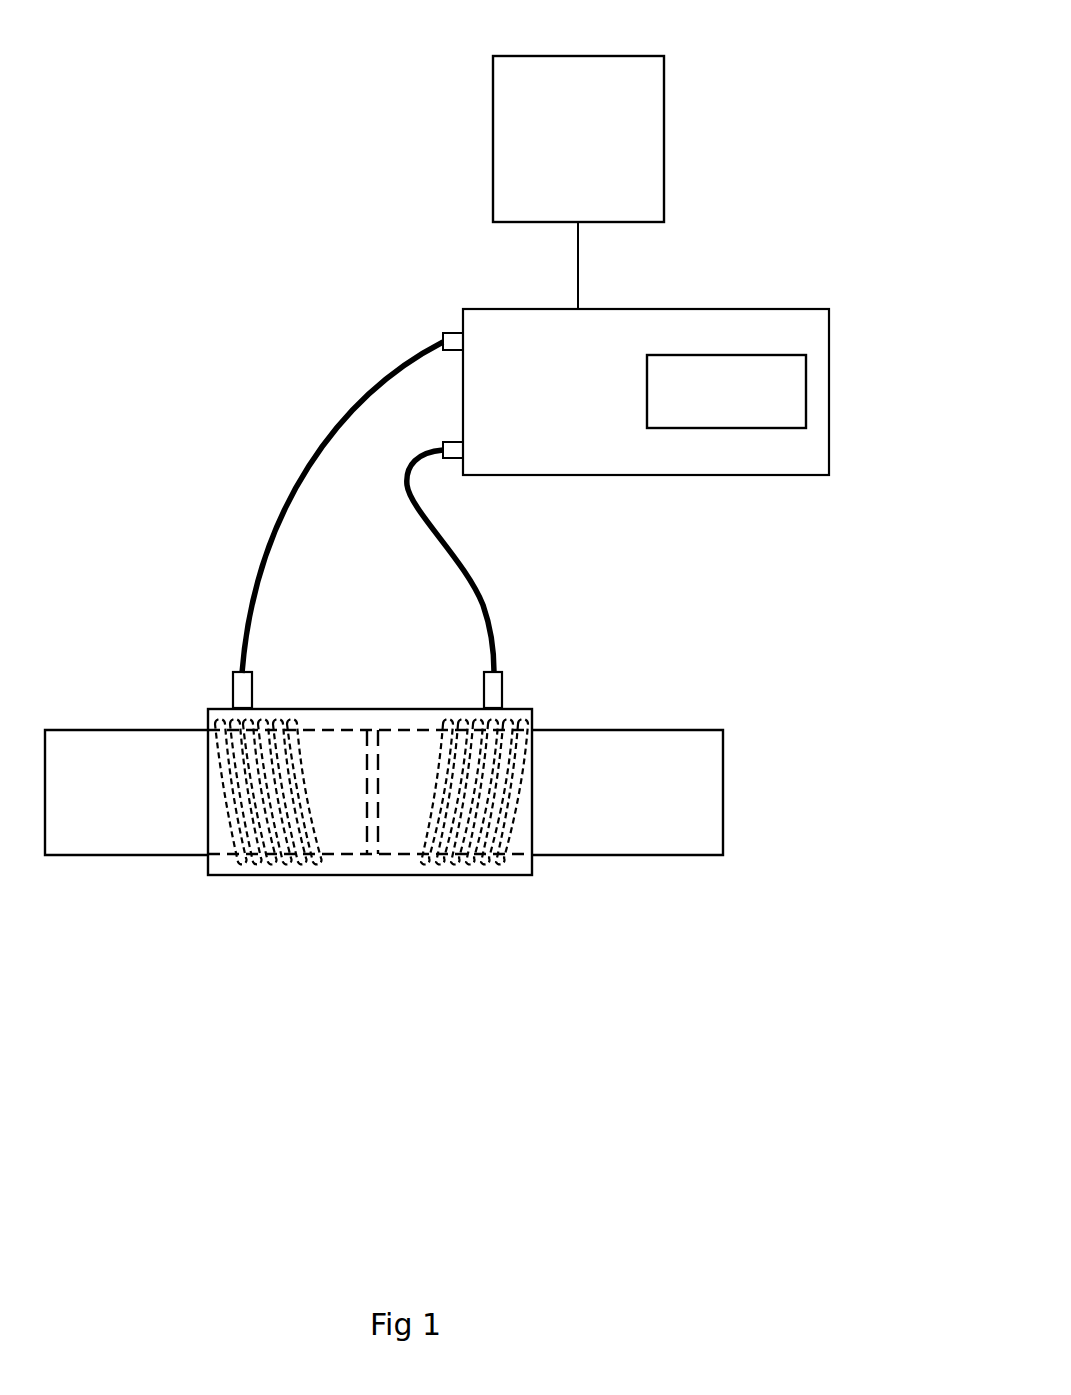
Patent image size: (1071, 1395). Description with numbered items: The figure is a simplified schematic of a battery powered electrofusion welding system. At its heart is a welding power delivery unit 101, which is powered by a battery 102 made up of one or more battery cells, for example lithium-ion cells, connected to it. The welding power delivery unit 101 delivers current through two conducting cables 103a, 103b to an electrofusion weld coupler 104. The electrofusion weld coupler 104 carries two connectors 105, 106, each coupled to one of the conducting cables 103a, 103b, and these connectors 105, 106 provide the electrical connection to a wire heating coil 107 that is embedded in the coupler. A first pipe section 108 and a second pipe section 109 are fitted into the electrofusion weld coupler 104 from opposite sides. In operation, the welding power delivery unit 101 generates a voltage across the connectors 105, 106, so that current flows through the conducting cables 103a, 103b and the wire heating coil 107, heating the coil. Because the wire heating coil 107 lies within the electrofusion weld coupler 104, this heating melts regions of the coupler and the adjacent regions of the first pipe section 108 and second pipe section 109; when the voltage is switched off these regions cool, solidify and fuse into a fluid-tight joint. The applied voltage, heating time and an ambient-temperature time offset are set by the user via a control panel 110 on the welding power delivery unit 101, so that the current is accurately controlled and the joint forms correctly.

The welding power delivery unit 101 is at (645, 344).
The battery 102 is at (633, 160).
The conducting cable 103a is at (335, 507).
The conducting cable 103b is at (500, 561).
The electrofusion weld coupler 104 is at (370, 849).
The connector 105 is at (550, 650).
The connector 106 is at (297, 653).
The wire heating coil 107 is at (475, 828).
The first pipe section 108 is at (654, 746).
The second pipe section 109 is at (126, 747).
The control panel 110 is at (775, 360).